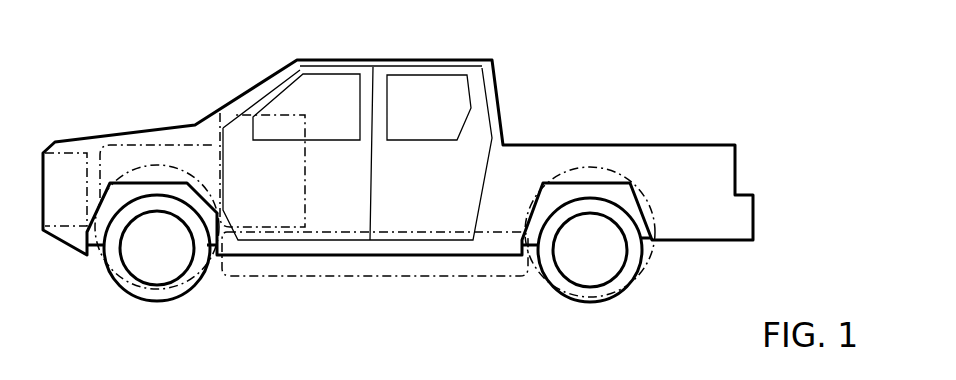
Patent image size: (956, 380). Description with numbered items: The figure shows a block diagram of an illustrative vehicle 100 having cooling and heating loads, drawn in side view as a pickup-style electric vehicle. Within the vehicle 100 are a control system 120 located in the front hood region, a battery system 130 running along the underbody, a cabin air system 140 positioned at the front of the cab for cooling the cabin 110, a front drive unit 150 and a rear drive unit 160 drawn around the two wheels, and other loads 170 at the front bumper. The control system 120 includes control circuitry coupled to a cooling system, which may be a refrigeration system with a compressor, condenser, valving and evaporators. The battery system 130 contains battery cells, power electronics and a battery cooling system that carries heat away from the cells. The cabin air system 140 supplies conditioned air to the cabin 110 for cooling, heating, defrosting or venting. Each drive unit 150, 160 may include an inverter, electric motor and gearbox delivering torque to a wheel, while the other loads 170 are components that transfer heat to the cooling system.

The vehicle 100 is at (833, 81).
The cabin 110 is at (303, 100).
The control system 120 is at (122, 142).
The battery system 130 is at (322, 277).
The cabin air system 140 is at (222, 116).
The drive unit 150 is at (157, 166).
The drive unit 160 is at (583, 165).
The other loads 170 is at (55, 157).